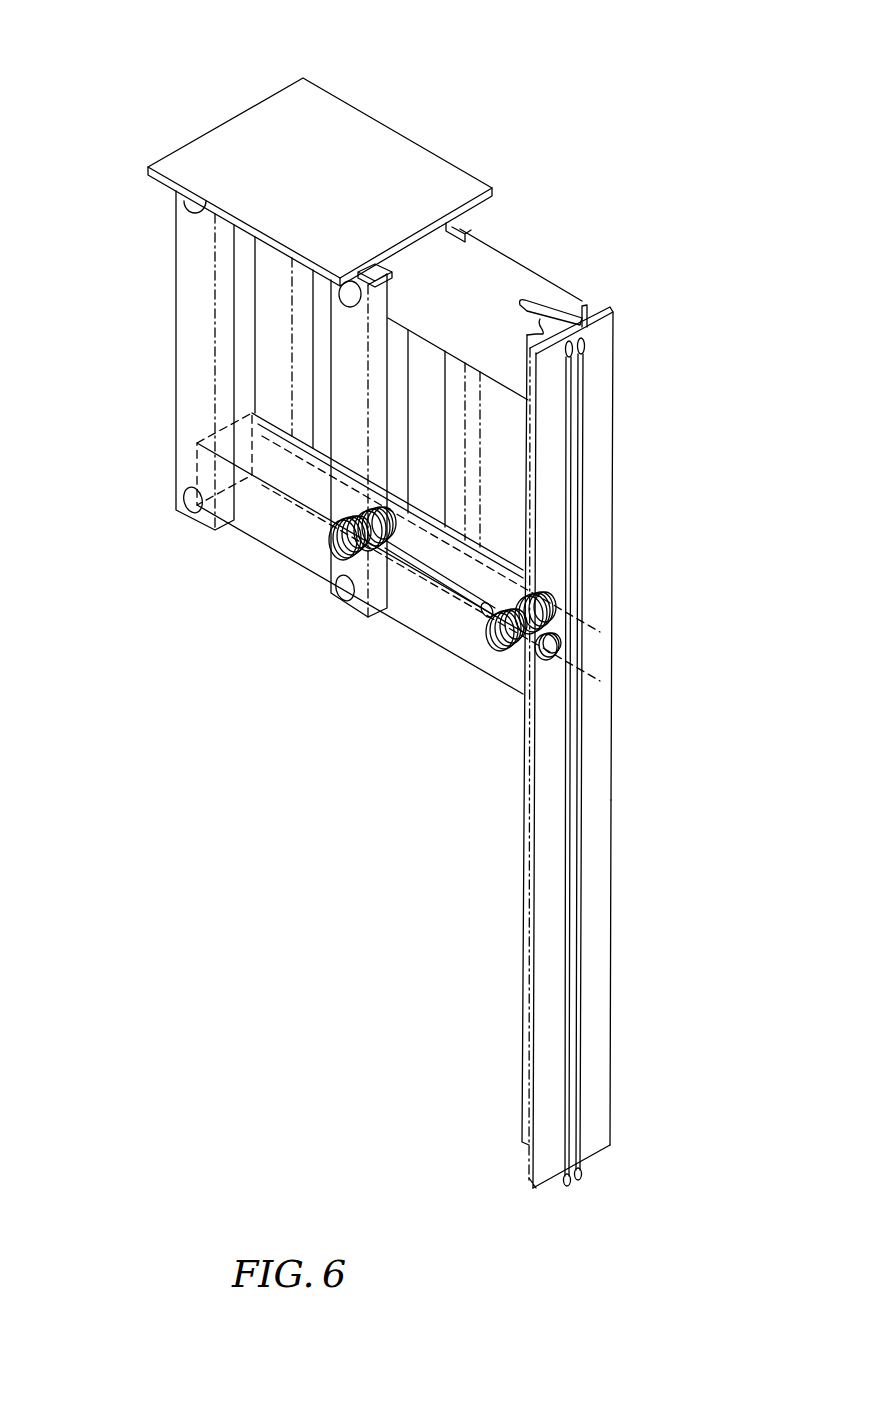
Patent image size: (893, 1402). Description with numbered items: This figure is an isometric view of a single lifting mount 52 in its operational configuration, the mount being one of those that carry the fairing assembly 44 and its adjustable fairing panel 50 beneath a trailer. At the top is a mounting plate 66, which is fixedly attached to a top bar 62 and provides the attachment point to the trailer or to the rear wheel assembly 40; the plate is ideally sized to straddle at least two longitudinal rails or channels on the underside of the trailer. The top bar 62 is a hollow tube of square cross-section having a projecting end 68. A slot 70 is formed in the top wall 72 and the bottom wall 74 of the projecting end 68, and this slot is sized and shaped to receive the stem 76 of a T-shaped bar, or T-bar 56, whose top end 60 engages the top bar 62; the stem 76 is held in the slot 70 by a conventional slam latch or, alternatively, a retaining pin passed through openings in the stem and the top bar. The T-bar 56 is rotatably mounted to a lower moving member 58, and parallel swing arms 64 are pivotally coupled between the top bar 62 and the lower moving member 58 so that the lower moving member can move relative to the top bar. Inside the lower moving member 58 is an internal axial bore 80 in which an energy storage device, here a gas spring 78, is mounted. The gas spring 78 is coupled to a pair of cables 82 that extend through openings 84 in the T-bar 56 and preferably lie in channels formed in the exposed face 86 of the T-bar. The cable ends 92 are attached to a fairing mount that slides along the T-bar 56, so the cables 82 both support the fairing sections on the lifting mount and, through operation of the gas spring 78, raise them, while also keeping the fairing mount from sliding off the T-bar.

The rear wheel assembly 40 is at (490, 187).
The fairing assembly 44 is at (613, 342).
The adjustable fairing panel 50 is at (177, 313).
The lifting mount 52 is at (386, 108).
The T-bar 56 is at (617, 814).
The lower moving member 58 is at (274, 553).
The top end 60 is at (613, 311).
The top bar 62 is at (491, 247).
The swing arms 64 is at (278, 298).
The mounting plate 66 is at (308, 108).
The projecting end 68 is at (547, 297).
The slot 70 is at (529, 292).
The top wall 72 is at (463, 399).
The bottom wall 74 is at (491, 390).
The stem 76 is at (560, 332).
The gas spring 78 is at (475, 582).
The internal axial bore 80 is at (434, 598).
The cables 82 is at (598, 1184).
The openings 84 is at (613, 356).
The exposed face 86 is at (597, 887).
The cable ends 92 is at (583, 1172).